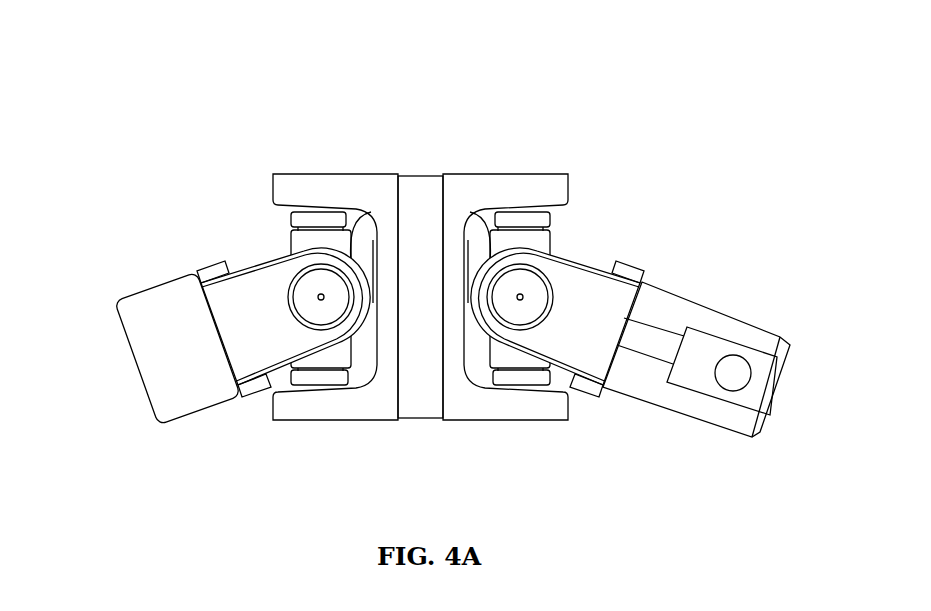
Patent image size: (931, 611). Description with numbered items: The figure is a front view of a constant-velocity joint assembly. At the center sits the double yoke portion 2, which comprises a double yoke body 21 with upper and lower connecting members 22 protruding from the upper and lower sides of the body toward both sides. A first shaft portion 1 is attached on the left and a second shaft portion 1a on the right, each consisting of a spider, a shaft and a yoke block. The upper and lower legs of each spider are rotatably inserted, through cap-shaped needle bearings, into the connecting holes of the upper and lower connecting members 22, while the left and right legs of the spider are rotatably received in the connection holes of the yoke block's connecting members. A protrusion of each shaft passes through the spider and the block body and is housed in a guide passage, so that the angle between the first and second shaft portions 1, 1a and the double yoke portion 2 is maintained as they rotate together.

The first shaft portion 1 is at (220, 287).
The second shaft portion 1a is at (625, 287).
The double yoke portion 2 is at (420, 252).
The double yoke body 21 is at (432, 188).
The upper/lower connecting member 22 is at (552, 182).